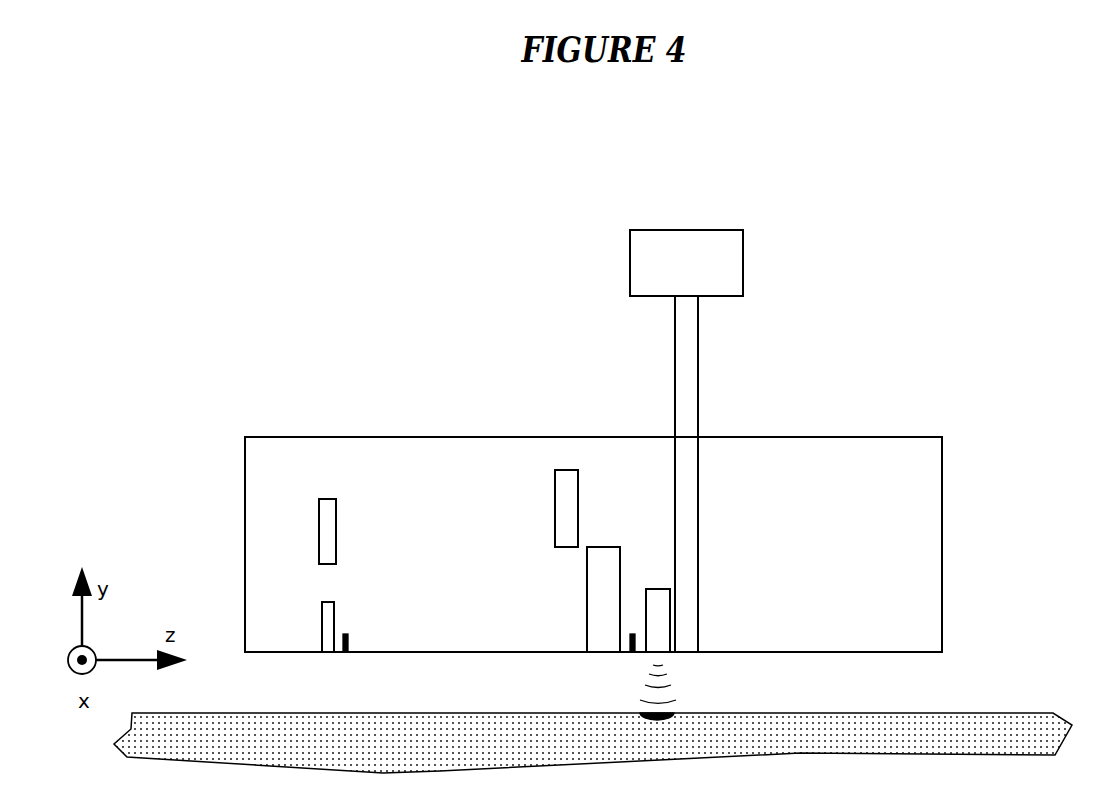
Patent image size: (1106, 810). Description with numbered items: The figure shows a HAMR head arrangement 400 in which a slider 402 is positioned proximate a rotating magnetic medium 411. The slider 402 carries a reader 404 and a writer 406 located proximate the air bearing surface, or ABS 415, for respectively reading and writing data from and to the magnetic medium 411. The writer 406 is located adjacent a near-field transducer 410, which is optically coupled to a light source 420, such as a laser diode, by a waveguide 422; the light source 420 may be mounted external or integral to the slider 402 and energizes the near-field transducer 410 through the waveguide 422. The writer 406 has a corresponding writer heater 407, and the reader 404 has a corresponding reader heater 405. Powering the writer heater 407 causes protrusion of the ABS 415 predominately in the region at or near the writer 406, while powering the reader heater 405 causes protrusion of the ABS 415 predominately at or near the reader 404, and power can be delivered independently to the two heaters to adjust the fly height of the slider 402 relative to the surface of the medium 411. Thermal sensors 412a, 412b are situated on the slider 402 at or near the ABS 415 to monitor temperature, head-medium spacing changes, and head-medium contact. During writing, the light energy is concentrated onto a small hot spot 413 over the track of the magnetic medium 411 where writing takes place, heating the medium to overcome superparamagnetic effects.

The HAMR head arrangement 400 is at (330, 274).
The slider 402 is at (976, 410).
The reader 404 is at (334, 604).
The reader heater 405 is at (336, 531).
The writer 406 is at (586, 609).
The writer heater 407 is at (555, 515).
The near-field transducer 410 is at (656, 589).
The magnetic medium 411 is at (1003, 713).
The thermal sensor 412a is at (632, 655).
The thermal sensor 412b is at (345, 655).
The hot spot 413 is at (657, 719).
The air bearing surface (ABS) 415 is at (823, 655).
The light source 420 is at (743, 257).
The waveguide 422 is at (698, 372).